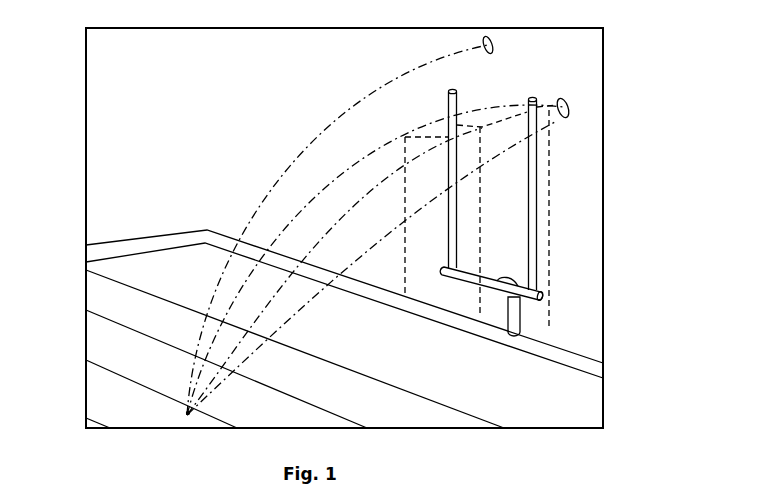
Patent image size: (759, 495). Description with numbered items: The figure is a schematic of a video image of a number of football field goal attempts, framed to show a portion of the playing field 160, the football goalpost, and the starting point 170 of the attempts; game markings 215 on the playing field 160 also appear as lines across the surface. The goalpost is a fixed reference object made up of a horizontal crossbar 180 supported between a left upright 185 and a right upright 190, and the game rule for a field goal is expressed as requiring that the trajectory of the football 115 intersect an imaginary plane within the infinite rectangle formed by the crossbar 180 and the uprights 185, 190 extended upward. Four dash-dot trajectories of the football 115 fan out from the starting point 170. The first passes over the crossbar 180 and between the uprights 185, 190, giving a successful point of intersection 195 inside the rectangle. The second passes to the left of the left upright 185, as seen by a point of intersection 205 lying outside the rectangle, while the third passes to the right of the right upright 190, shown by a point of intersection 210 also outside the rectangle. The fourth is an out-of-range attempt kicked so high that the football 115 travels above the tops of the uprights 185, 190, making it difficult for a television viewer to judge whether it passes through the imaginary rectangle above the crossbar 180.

The playing field 160 is at (130, 240).
The game markings 215 is at (118, 374).
The starting point 170 is at (188, 412).
The point of intersection 205 is at (403, 137).
The left upright 185 is at (448, 118).
The football 115 is at (484, 44).
The successful point of intersection 195 is at (483, 127).
The point of intersection 210 is at (555, 120).
The right upright 190 is at (537, 222).
The crossbar 180 is at (543, 296).